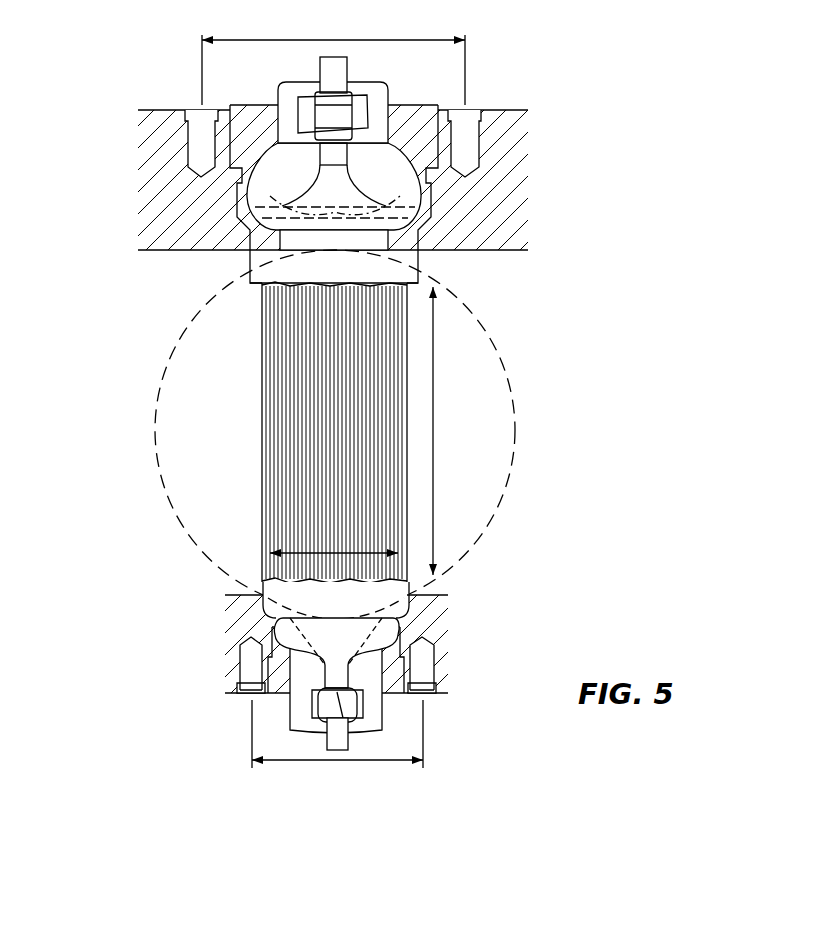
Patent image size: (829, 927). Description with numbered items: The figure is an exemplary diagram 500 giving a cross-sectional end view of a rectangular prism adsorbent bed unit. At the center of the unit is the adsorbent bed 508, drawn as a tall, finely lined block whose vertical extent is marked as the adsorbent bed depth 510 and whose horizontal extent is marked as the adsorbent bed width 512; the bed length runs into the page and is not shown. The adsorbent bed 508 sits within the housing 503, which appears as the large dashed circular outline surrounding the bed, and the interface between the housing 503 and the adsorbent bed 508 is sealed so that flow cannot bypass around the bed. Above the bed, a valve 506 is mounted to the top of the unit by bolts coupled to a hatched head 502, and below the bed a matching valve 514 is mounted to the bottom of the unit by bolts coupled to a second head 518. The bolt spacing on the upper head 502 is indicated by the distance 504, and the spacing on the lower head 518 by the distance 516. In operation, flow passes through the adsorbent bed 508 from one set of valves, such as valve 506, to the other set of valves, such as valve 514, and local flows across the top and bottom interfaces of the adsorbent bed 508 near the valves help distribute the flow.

The diagram 500 is at (106, 63).
The head 502 is at (162, 188).
The housing 503 is at (186, 332).
The distance 504 is at (357, 40).
The valve 506 is at (262, 216).
The adsorbent bed 508 is at (278, 412).
The adsorbent bed depth 510 is at (434, 412).
The adsorbent bed width 512 is at (288, 553).
The valve 514 is at (395, 618).
The distance 516 is at (346, 763).
The head 518 is at (240, 626).